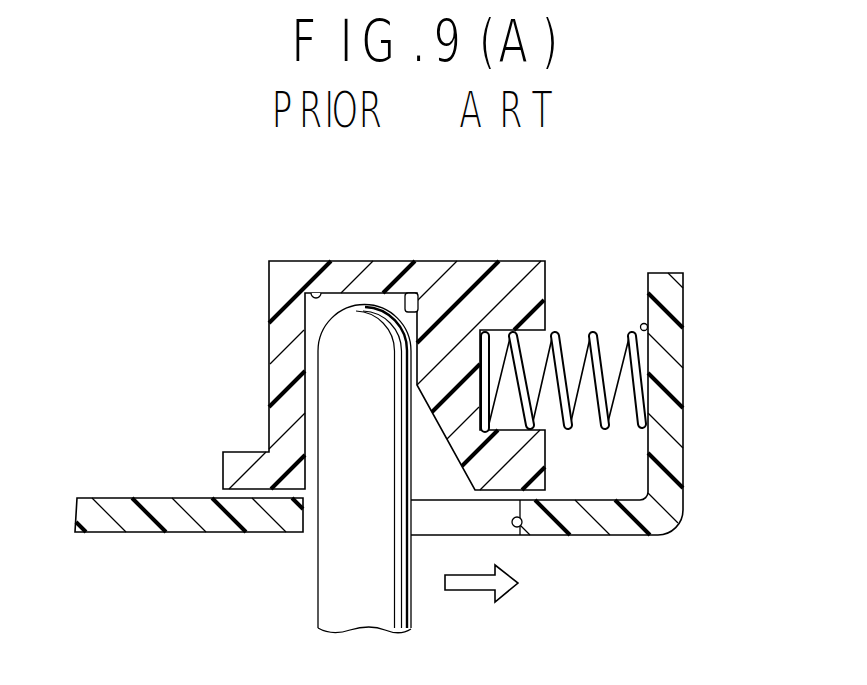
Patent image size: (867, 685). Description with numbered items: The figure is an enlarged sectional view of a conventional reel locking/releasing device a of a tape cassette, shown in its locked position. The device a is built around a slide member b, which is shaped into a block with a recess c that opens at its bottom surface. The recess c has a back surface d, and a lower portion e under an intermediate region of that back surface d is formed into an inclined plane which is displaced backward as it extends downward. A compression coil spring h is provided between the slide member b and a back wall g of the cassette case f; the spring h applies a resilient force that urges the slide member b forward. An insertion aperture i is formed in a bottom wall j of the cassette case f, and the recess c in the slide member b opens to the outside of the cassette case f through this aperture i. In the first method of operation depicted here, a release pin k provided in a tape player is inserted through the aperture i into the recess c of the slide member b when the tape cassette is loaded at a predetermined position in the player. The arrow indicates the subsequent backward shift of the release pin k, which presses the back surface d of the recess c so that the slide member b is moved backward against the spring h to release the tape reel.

The reel locking/releasing device a is at (583, 194).
The slide member b is at (360, 261).
The recess c is at (316, 293).
The back surface d is at (420, 291).
The lower portion e is at (437, 428).
The cassette case f is at (571, 429).
The back wall g is at (648, 327).
The compression coil spring h is at (592, 333).
The insertion aperture i is at (521, 527).
The bottom wall j is at (177, 497).
The release pin k is at (352, 469).